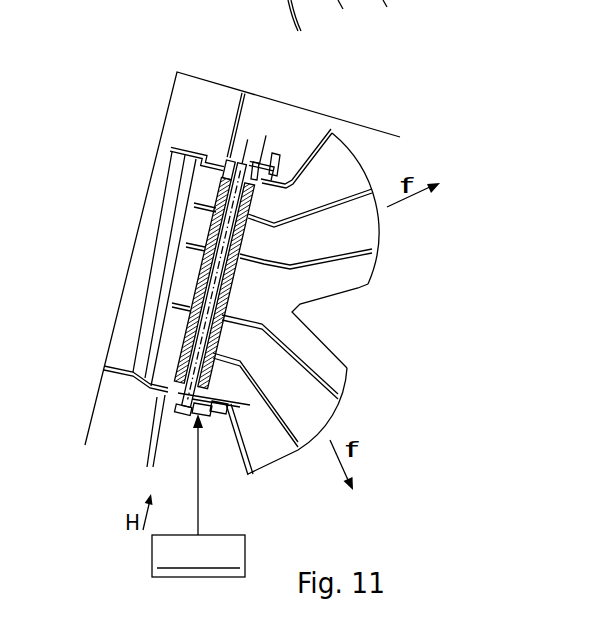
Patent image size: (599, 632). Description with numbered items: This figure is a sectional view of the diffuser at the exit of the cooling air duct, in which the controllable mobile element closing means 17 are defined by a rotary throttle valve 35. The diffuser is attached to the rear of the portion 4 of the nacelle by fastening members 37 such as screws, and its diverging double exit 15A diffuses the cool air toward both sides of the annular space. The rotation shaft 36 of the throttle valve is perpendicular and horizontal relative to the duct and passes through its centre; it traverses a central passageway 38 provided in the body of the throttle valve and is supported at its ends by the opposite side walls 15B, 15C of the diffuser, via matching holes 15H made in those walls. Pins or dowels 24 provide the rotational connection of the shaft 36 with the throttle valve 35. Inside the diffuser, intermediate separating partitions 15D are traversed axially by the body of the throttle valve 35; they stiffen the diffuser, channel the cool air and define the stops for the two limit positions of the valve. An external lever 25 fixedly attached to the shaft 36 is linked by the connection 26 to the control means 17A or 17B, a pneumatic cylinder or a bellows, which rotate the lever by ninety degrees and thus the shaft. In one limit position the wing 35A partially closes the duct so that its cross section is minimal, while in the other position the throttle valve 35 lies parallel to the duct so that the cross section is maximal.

The portion of the nacelle 4 is at (212, 82).
The fastening members 37 is at (278, 15).
The wing of the throttle valve 35A is at (340, 17).
The rotary throttle valve 35 is at (214, 210).
The pins or dowels 24 is at (190, 331).
The side wall of the diffuser 15B is at (230, 167).
The matching holes 15H is at (264, 158).
The intermediate separating partitions 15D is at (187, 252).
The central passageway 38 is at (187, 316).
The rotation shaft 36 is at (175, 375).
The side wall of the diffuser 15C is at (158, 400).
The external lever 25 is at (203, 428).
The closing means 17 is at (256, 245).
The diverging double exit 15A is at (333, 352).
The connection 26 is at (199, 505).
The control means 17A is at (198, 556).
The control means 17B is at (223, 556).